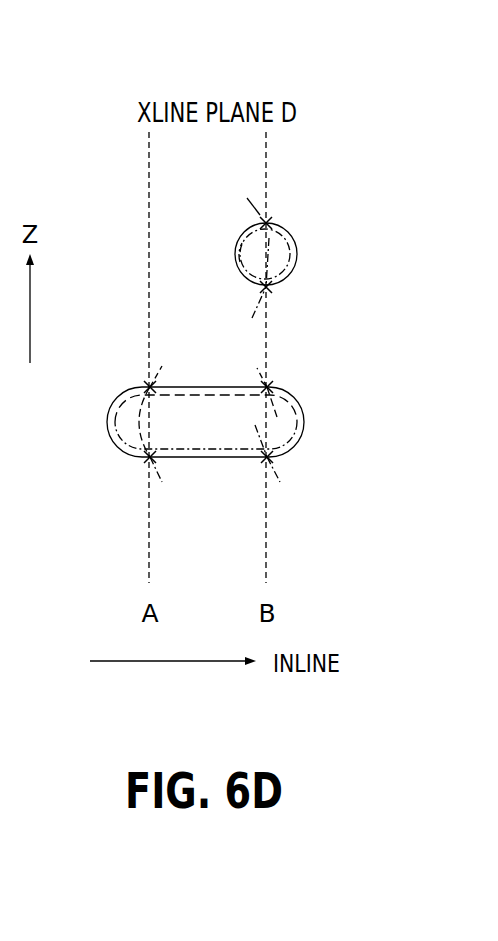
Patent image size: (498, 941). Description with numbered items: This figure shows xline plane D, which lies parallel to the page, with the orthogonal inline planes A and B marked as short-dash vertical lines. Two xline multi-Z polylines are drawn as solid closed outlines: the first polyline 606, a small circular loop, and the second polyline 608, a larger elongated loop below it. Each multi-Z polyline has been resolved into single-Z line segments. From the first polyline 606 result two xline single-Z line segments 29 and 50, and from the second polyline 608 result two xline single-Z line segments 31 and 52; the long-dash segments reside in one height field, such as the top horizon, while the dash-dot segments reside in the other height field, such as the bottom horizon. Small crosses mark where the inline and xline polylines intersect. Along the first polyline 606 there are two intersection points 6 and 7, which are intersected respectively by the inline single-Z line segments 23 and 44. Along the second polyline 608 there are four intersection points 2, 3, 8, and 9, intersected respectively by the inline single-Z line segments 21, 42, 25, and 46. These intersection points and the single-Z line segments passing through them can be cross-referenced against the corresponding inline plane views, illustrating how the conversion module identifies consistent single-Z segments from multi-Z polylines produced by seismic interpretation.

The intersection point 2 is at (140, 377).
The intersection point 3 is at (140, 469).
The intersection point 6 is at (277, 215).
The intersection point 7 is at (277, 294).
The intersection point 8 is at (277, 377).
The intersection point 9 is at (260, 469).
The inline single-Z line segment 21 is at (163, 364).
The inline single-Z line segment 23 is at (248, 208).
The inline single-Z line segment 25 is at (257, 365).
The xline single-Z line segment 29 is at (275, 230).
The xline single-Z line segment 31 is at (157, 394).
The inline single-Z line segment 42 is at (156, 470).
The inline single-Z line segment 44 is at (258, 307).
The inline single-Z line segment 46 is at (273, 468).
The xline single-Z line segment 50 is at (240, 262).
The xline single-Z line segment 52 is at (197, 449).
The xline multi-Z polyline 606 is at (297, 257).
The xline multi-Z polyline 608 is at (106, 423).